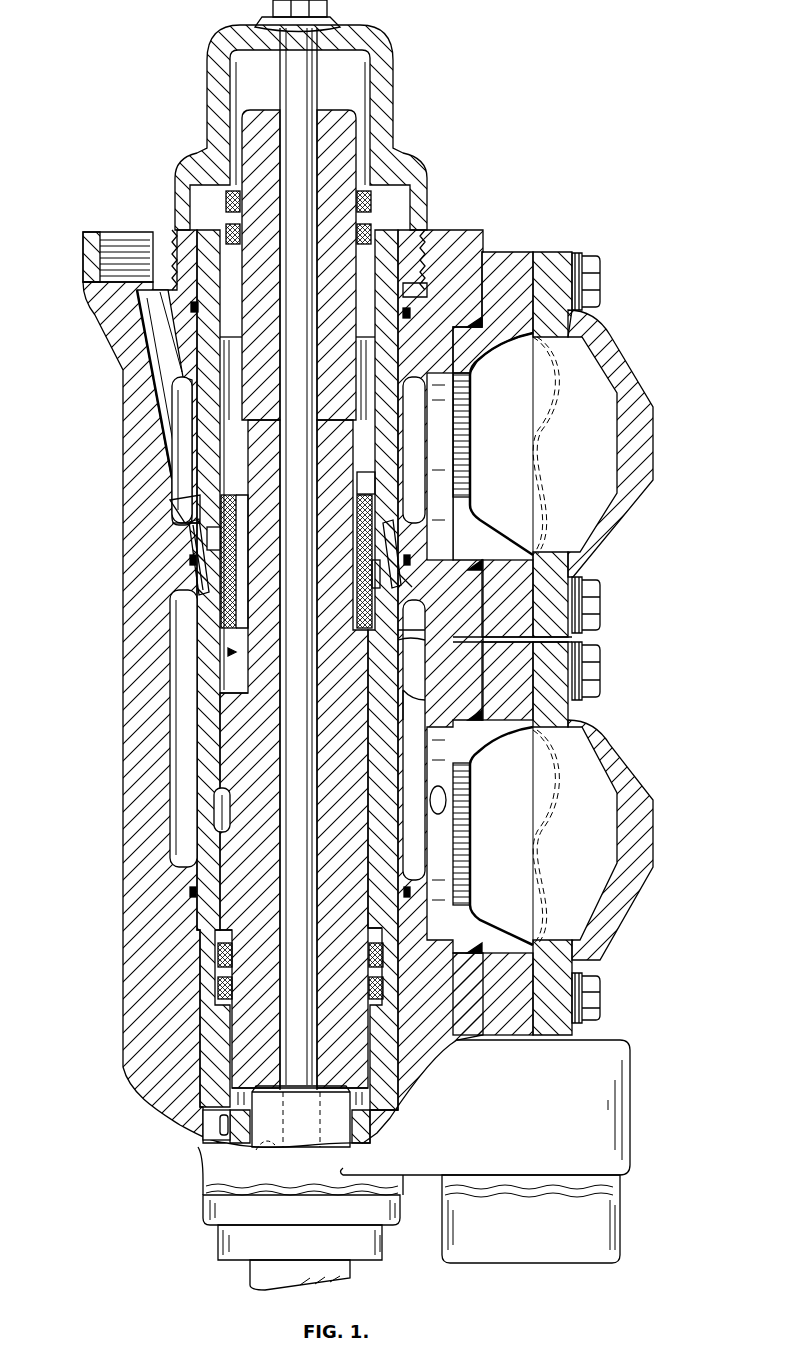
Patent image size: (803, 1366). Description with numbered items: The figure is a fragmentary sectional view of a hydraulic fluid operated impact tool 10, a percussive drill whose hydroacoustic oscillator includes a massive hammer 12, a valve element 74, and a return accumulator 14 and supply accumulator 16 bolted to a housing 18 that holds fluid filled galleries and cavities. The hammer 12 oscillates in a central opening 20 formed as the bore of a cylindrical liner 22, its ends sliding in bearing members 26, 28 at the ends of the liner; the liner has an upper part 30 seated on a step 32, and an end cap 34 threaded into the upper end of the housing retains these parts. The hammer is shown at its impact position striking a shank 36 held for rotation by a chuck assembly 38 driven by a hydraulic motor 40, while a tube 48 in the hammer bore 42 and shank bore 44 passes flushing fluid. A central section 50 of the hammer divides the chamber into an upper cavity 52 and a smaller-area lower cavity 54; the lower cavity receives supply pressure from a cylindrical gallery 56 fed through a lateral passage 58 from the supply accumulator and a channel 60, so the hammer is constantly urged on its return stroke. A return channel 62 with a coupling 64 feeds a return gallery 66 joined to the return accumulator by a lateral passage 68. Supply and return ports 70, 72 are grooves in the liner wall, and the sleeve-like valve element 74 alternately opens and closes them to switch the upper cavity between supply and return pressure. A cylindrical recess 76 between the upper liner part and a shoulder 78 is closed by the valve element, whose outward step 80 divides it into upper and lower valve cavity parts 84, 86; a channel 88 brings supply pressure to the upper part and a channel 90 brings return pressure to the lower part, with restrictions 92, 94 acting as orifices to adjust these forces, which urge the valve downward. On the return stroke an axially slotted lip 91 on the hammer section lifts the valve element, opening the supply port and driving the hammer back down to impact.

The impact tool 10 is at (160, 140).
The hammer 12 is at (345, 136).
The return accumulator 14 is at (638, 400).
The supply accumulator 16 is at (640, 846).
The housing 18 is at (122, 440).
The central opening 20 is at (230, 652).
The liner 22 is at (210, 750).
The bearing member 26 is at (205, 992).
The bearing member 28 is at (382, 204).
The upper liner part 30 is at (212, 398).
The step 32 is at (250, 524).
The end cap 34 is at (390, 60).
The shank 36 is at (332, 1147).
The chuck assembly 38 is at (202, 1216).
The hydraulic motor 40 is at (610, 1230).
The bore 42 is at (312, 112).
The bore 44 is at (258, 1148).
The tube 48 is at (290, 80).
The central section 50 is at (225, 775).
The upper cavity 52 is at (180, 480).
The lower cavity 54 is at (222, 802).
The supply gallery 56 is at (180, 682).
The lateral passage 58 is at (447, 884).
The supply channel 60 is at (442, 800).
The return channel 62 is at (138, 330).
The coupling 64 is at (100, 262).
The return gallery 66 is at (172, 448).
The lateral passage 68 is at (445, 384).
The supply port 70 is at (420, 634).
The return port 72 is at (190, 505).
The valve element 74 is at (365, 568).
The cylindrical recess 76 is at (216, 536).
The shoulder 78 is at (208, 608).
The step 80 is at (236, 552).
The upper valve cavity part 84 is at (357, 502).
The lower valve cavity part 86 is at (370, 592).
The channel 88 is at (408, 548).
The channel 90 is at (200, 576).
The axially slotted lip 91 is at (400, 692).
The restriction 92 is at (414, 584).
The restriction 94 is at (188, 532).